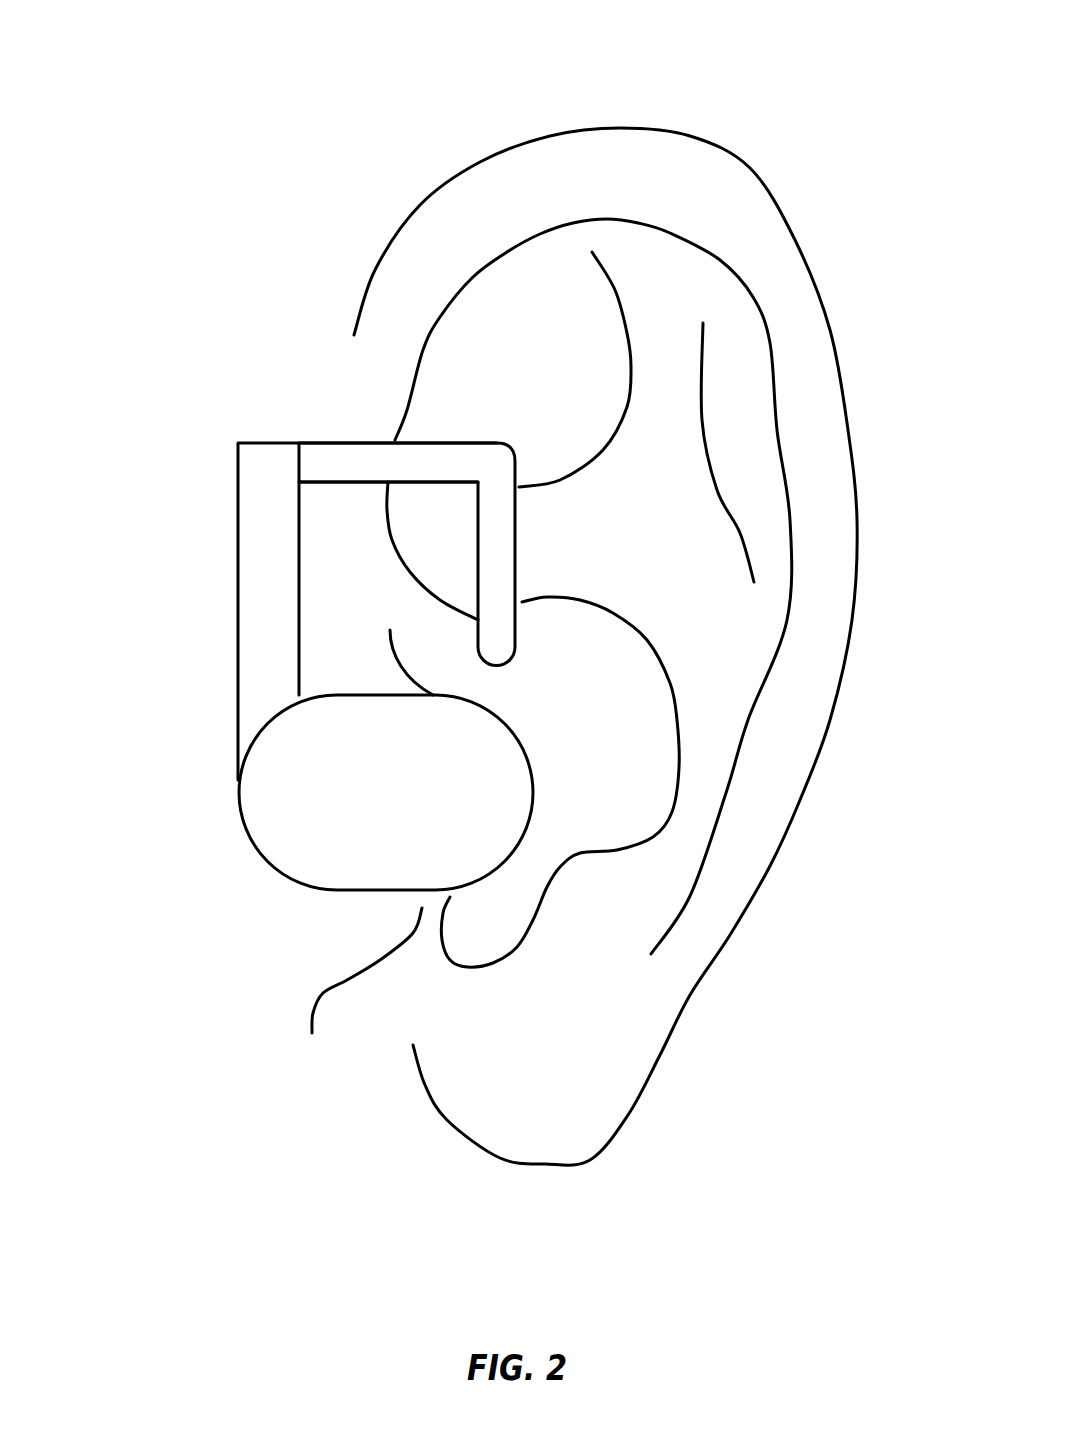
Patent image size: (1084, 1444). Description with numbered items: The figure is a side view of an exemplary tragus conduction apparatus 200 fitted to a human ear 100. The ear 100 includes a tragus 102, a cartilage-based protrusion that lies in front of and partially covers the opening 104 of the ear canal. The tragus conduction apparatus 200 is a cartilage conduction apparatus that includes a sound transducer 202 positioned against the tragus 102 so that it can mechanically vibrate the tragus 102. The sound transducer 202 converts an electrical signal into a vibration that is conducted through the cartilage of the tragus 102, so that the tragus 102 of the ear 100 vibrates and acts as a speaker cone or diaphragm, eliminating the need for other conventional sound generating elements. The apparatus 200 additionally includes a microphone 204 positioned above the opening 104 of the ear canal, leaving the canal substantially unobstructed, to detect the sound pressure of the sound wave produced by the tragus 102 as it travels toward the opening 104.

The ear 100 is at (795, 240).
The tragus 102 is at (359, 988).
The opening 104 is at (560, 789).
The tragus conduction apparatus 200 is at (125, 118).
The sound transducer 202 is at (243, 827).
The microphone 204 is at (477, 629).